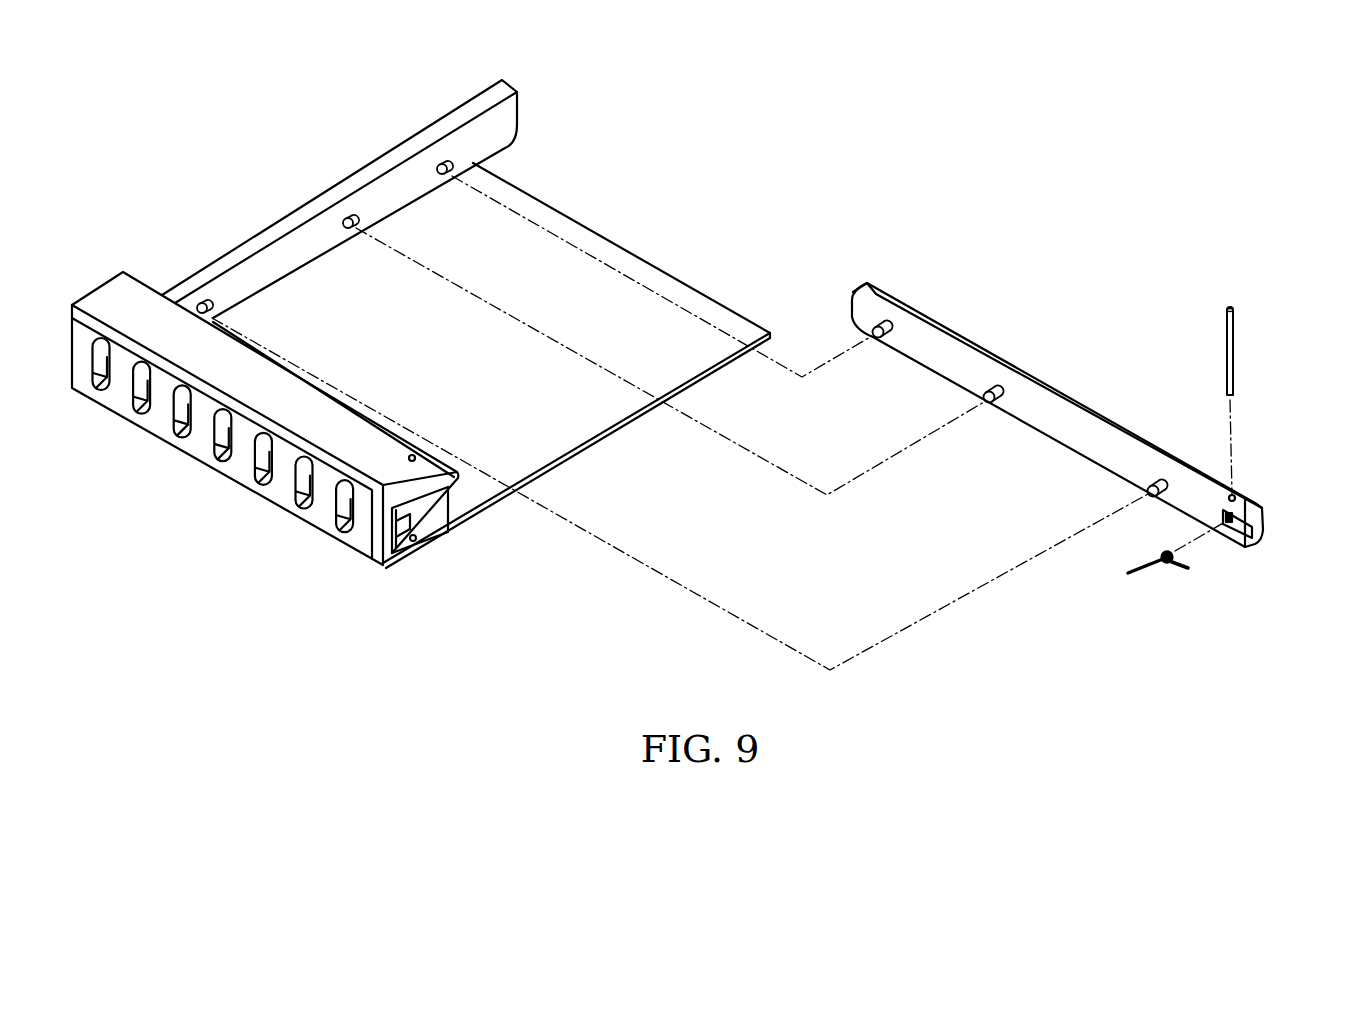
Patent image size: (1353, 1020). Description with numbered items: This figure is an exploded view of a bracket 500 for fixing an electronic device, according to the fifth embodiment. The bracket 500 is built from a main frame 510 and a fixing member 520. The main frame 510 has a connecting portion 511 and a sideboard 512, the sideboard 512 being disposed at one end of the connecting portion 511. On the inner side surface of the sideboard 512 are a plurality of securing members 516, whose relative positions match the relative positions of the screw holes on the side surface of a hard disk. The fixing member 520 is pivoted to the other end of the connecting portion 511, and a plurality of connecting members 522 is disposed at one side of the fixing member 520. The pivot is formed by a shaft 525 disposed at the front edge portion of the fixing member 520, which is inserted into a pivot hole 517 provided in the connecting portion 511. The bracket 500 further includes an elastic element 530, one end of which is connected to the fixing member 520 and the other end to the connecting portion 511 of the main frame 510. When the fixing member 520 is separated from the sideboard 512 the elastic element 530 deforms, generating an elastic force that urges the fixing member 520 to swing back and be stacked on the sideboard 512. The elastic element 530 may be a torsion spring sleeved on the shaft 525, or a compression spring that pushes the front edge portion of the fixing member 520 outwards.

The bracket 500 is at (240, 118).
The main frame 510 is at (265, 447).
The connecting portion 511 is at (122, 398).
The sideboard 512 is at (393, 171).
The securing members 516 is at (205, 303).
The pivot hole 517 is at (416, 541).
The fixing member 520 is at (1057, 395).
The connecting members 522 is at (880, 327).
The shaft 525 is at (1235, 355).
The elastic element 530 is at (1166, 563).